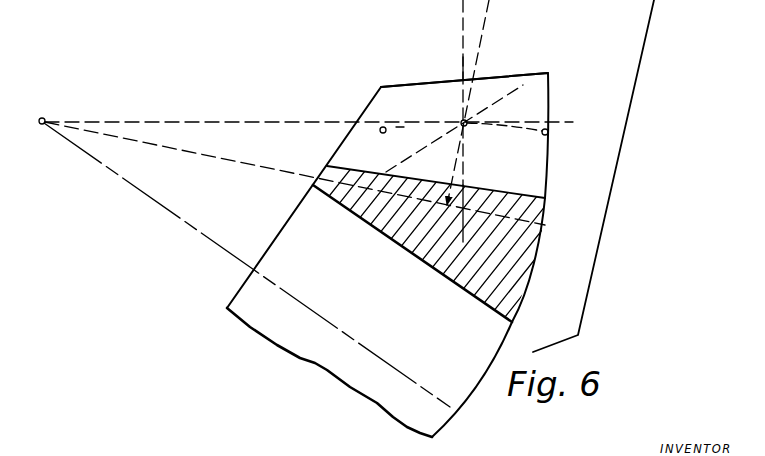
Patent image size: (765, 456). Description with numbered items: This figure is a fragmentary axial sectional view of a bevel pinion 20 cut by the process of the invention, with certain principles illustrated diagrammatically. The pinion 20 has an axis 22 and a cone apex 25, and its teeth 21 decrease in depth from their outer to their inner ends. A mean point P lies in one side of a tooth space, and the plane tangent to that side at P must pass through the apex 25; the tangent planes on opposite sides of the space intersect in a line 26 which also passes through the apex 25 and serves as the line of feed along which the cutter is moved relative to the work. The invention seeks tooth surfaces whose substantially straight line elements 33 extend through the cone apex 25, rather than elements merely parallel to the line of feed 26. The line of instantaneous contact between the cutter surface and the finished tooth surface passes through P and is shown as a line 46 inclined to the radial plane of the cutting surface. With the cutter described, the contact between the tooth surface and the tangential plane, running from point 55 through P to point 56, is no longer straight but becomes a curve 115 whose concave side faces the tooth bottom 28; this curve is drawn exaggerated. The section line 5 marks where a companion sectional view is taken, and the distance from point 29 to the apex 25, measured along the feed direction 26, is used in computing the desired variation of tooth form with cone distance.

The section line 5- 5 is at (463, 57).
The bevel pinion 20 is at (513, 286).
The teeth 21 is at (548, 97).
The axis of the pinion 22 is at (328, 322).
The apex of the pinion 25 is at (45, 117).
The line of intersection 26 is at (292, 180).
The tooth bottom 28 is at (522, 197).
The point 29 is at (452, 207).
The straight line elements 33 is at (293, 121).
The line of contact 46 is at (489, 111).
The end point of line of contact 55 is at (383, 133).
The end point of line of contact 56 is at (543, 135).
The curve 115 is at (400, 128).
The mean point P is at (461, 121).